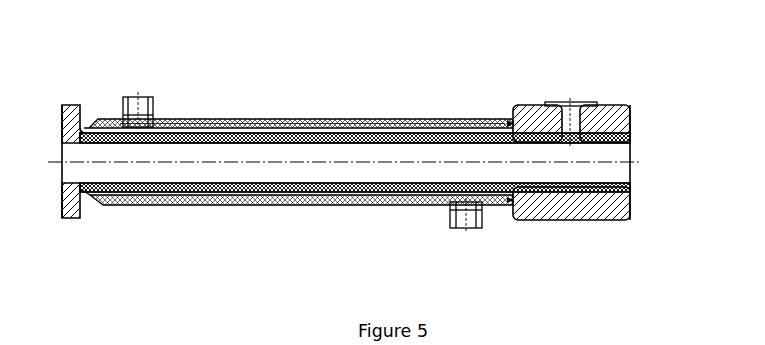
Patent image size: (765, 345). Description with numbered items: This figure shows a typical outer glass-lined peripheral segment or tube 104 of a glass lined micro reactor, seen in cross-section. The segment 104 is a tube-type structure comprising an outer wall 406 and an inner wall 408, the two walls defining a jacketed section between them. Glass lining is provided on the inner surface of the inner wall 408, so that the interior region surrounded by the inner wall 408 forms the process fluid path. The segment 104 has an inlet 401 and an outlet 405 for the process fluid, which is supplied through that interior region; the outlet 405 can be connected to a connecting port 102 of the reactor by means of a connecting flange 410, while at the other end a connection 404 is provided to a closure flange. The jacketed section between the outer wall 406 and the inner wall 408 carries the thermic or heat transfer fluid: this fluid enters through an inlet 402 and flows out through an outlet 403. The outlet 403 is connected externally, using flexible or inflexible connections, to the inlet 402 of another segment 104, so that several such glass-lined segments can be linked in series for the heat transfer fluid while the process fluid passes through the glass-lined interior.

The connecting port 102 is at (607, 128).
The outer glass lined segment 104 is at (352, 82).
The inlet for process fluid 401 is at (568, 100).
The inlet for heat transfer fluid 402 is at (143, 95).
The outlet for heat transfer fluid 403 is at (465, 230).
The connection to closure flange 404 is at (620, 168).
The outlet for process fluid 405 is at (61, 162).
The outer wall 406 is at (362, 120).
The glass lined inner wall 408 is at (447, 121).
The connecting flange 410 is at (82, 216).